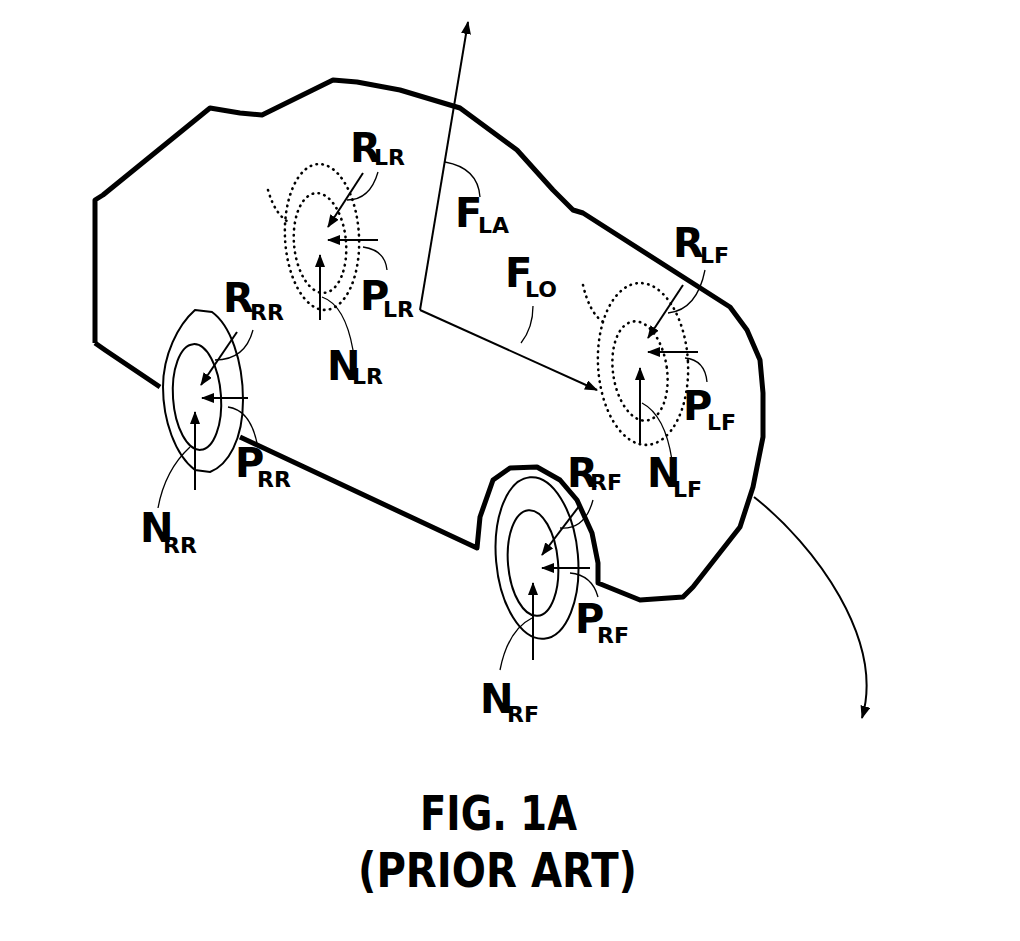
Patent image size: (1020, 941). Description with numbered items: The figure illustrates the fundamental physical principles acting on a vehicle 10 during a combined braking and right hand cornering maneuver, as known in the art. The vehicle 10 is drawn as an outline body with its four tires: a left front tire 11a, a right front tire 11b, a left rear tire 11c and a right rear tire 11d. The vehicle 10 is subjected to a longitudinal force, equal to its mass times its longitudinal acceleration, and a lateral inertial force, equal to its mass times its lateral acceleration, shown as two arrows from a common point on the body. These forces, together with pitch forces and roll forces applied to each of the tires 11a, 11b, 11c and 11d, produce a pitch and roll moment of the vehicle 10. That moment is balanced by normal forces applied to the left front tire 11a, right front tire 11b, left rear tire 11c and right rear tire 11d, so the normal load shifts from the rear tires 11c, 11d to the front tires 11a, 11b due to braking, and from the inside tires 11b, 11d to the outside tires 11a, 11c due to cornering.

The vehicle 10 is at (320, 82).
The left front tire 11a is at (624, 339).
The right front tire 11b is at (497, 510).
The left rear tire 11c is at (303, 222).
The right rear tire 11d is at (195, 308).